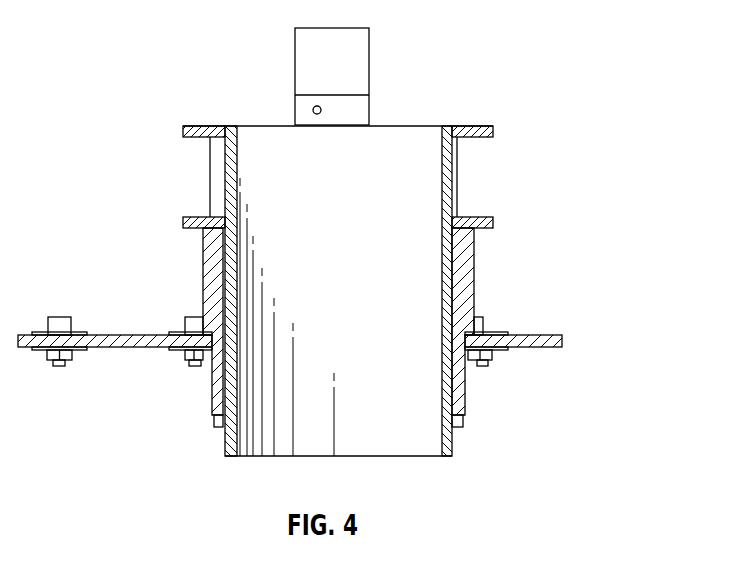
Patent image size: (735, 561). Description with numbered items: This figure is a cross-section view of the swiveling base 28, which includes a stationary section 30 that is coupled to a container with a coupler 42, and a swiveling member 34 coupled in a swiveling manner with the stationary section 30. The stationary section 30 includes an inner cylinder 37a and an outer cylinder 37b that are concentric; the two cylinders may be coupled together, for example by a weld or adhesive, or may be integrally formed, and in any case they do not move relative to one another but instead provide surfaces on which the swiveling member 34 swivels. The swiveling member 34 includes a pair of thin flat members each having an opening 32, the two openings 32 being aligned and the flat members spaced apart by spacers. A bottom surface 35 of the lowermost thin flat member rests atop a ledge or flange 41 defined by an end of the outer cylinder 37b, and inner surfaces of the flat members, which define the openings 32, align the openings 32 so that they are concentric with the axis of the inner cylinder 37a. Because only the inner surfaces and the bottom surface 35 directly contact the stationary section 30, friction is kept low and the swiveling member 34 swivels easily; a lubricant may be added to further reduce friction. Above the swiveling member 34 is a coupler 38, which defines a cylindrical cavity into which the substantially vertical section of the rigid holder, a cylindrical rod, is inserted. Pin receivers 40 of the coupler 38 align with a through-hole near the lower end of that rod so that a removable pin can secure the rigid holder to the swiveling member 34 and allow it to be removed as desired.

The swiveling base 28 is at (543, 134).
The stationary section 30 is at (475, 292).
The opening 32 is at (401, 125).
The swiveling member 34 is at (206, 126).
The bottom surface 35 is at (193, 229).
The inner cylinder 37a is at (441, 433).
The outer cylinder 37b is at (475, 258).
The coupler 38 is at (295, 50).
The pin receiver 40 is at (312, 108).
The ledge (flange) 41 is at (463, 217).
The coupler 42 is at (538, 334).